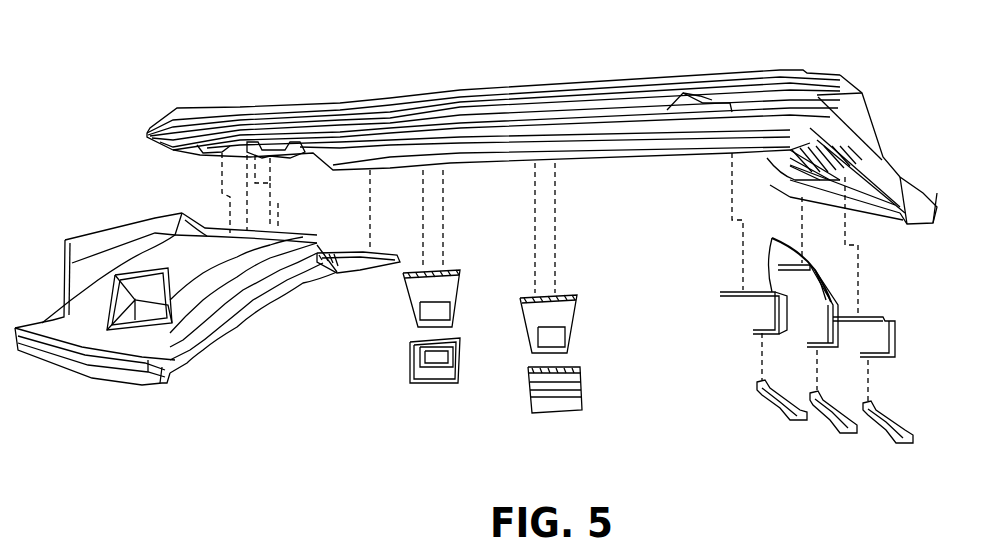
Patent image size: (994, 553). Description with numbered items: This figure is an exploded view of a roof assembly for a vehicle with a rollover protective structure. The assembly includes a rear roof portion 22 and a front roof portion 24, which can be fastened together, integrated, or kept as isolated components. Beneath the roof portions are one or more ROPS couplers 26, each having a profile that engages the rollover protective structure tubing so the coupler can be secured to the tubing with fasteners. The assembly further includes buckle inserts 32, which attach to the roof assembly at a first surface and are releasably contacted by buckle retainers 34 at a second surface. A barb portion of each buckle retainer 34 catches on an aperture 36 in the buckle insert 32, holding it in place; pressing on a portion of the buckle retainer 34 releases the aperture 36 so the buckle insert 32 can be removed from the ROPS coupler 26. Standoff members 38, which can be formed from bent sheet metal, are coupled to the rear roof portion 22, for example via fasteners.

The rear roof portion 22 is at (850, 92).
The front roof portion 24 is at (128, 233).
The ROPS coupler 26 is at (580, 390).
The buckle insert 32 is at (573, 317).
The buckle retainer 34 is at (442, 357).
The aperture 36 is at (440, 308).
The standoff member 38 is at (816, 330).